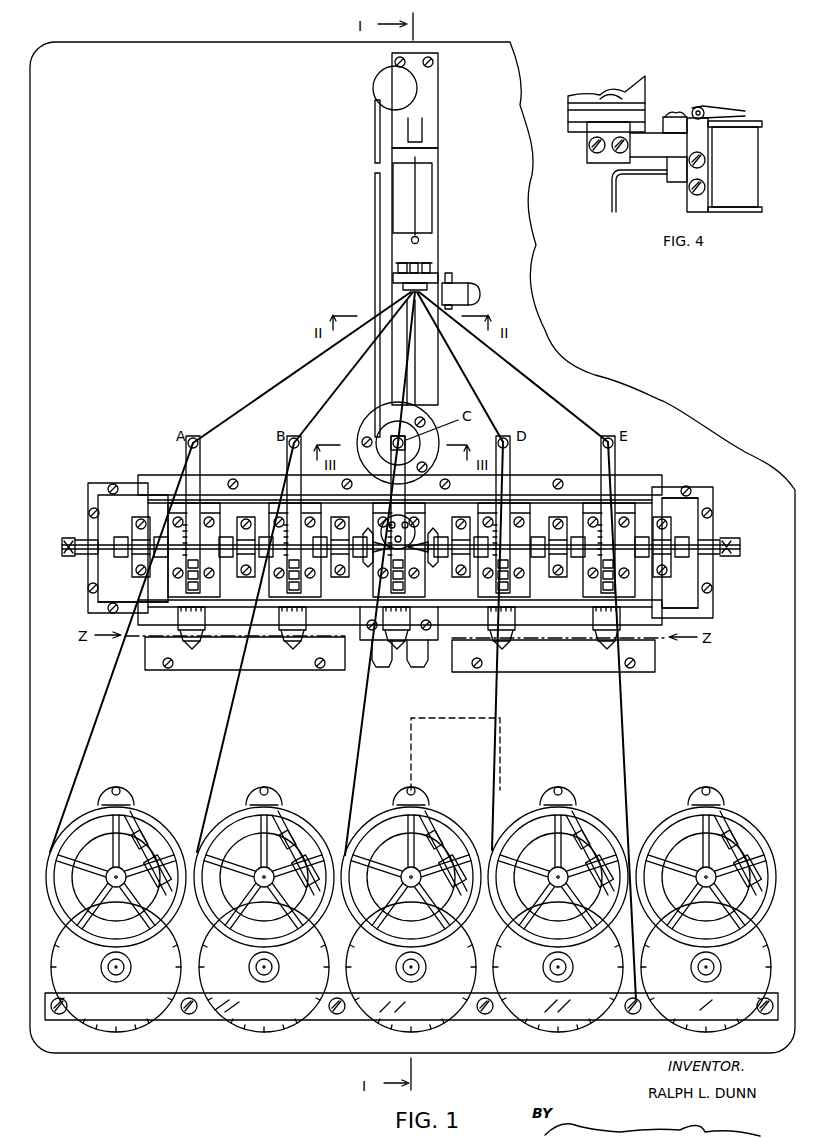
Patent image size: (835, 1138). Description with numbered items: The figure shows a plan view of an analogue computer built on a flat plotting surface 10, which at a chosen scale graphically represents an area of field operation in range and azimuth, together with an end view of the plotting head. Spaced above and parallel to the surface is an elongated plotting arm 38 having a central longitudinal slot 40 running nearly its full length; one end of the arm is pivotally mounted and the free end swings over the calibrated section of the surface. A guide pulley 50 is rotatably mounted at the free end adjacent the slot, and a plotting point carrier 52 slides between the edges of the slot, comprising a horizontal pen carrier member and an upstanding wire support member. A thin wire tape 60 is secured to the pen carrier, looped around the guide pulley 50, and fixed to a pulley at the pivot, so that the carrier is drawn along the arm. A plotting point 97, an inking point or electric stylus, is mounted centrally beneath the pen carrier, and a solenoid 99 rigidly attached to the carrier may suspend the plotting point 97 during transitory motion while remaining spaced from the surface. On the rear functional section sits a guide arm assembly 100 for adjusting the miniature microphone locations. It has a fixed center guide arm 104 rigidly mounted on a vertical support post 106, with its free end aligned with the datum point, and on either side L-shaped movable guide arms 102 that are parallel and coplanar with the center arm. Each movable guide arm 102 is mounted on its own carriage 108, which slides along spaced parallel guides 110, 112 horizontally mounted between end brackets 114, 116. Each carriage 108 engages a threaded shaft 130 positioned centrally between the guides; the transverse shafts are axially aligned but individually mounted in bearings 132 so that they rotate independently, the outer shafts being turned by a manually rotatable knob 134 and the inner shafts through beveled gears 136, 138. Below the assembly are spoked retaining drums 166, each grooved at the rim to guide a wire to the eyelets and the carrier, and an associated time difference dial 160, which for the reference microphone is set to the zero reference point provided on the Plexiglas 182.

In FIG. 1, the flat plotting surface 10 is at (222, 111).
In FIG. 1, the plotting arm 38 is at (432, 215).
In FIG. 1, the central longitudinal slot 40 is at (418, 177).
In FIG. 1, the guide pulley 50 is at (378, 82).
In FIG. 1, the plotting point carrier 52 is at (427, 252).
In FIG. 1, the wire tape 60 is at (373, 131).
In FIG. 4, the plotting point 97 is at (610, 200).
In FIG. 4, the solenoid 99 is at (753, 156).
In FIG. 1, the guide arm assembly 100 is at (694, 455).
In FIG. 1, the movable guide arms 102 is at (199, 456).
In FIG. 1, the fixed center guide arm 104 is at (401, 485).
In FIG. 1, the vertical support post 106 is at (412, 529).
In FIG. 1, the carriage 108 is at (635, 573).
In FIG. 1, the guide 110 is at (662, 501).
In FIG. 1, the guide 112 is at (100, 605).
In FIG. 1, the end bracket 114 is at (93, 522).
In FIG. 1, the end bracket 116 is at (714, 524).
In FIG. 1, the threaded shaft 130 is at (160, 560).
In FIG. 1, the bearings 132 is at (135, 528).
In FIG. 1, the manually rotatable knob 134 is at (67, 560).
In FIG. 1, the beveled gear 136 is at (368, 565).
In FIG. 1, the beveled gear 138 is at (430, 565).
In FIG. 1, the time difference dial 160 is at (700, 1027).
In FIG. 1, the retaining drum 166 is at (146, 811).
In FIG. 1, the Plexiglas 182 is at (172, 1016).